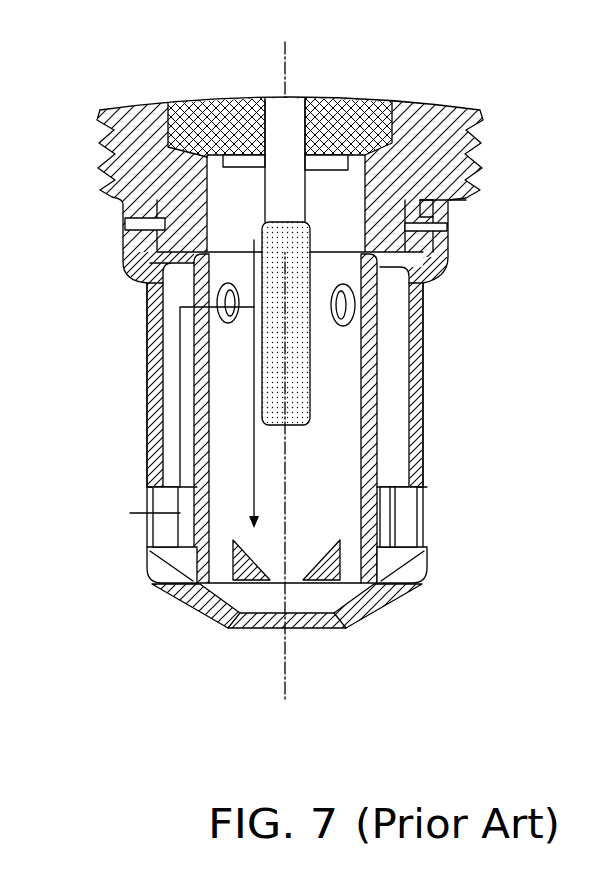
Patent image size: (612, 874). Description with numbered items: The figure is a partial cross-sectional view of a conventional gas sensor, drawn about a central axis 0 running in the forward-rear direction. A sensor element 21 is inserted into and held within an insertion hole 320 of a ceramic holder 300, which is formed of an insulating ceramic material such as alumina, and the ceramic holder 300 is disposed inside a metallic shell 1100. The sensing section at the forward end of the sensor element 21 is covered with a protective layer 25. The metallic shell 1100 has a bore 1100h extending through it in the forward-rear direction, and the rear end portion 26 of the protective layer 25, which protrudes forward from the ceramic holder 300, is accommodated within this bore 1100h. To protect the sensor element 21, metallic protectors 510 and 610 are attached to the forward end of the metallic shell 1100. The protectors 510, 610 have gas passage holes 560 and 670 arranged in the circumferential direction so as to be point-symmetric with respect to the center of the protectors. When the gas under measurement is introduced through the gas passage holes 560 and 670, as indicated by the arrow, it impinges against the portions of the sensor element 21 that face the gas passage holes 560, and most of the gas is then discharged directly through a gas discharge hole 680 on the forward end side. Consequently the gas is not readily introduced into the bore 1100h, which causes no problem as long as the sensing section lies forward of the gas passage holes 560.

The central axis 0 is at (285, 361).
The metallic shell 1100 is at (120, 138).
The ceramic holder 300 is at (250, 130).
The sensor element 21 is at (333, 118).
The insertion hole 320 is at (320, 122).
The rear end portion 26 is at (382, 212).
The protective layer 25 is at (300, 364).
The gas passage holes 560 is at (247, 298).
The bore 1100h is at (255, 313).
The metallic protector 510 is at (147, 460).
The metallic protector 610 is at (152, 472).
The gas passage holes 670 is at (143, 523).
The gas discharge hole 680 is at (293, 628).